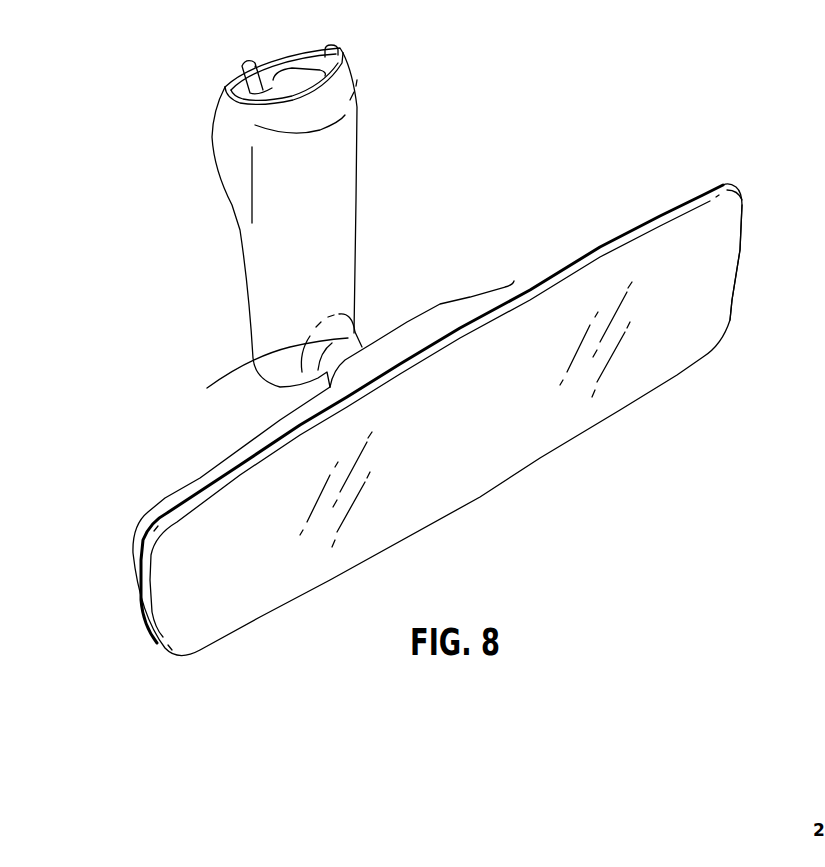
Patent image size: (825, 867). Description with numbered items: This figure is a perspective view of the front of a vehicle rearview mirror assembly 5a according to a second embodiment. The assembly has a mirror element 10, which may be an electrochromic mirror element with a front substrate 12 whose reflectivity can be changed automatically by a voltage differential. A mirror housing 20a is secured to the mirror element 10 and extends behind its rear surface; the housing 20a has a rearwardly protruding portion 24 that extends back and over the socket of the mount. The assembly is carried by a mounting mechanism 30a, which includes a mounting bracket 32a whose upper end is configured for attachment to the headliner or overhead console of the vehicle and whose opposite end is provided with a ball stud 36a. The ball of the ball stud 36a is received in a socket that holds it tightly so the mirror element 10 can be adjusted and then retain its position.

The rearview mirror assembly 5a is at (556, 116).
The mirror element 10 is at (726, 256).
The front substrate 12 is at (510, 440).
The mirror housing 20a is at (643, 214).
The rearwardly protruding portion 24 is at (441, 304).
The mounting mechanism 30a is at (207, 322).
The mounting bracket 32a is at (347, 231).
The ball stud 36a is at (230, 372).